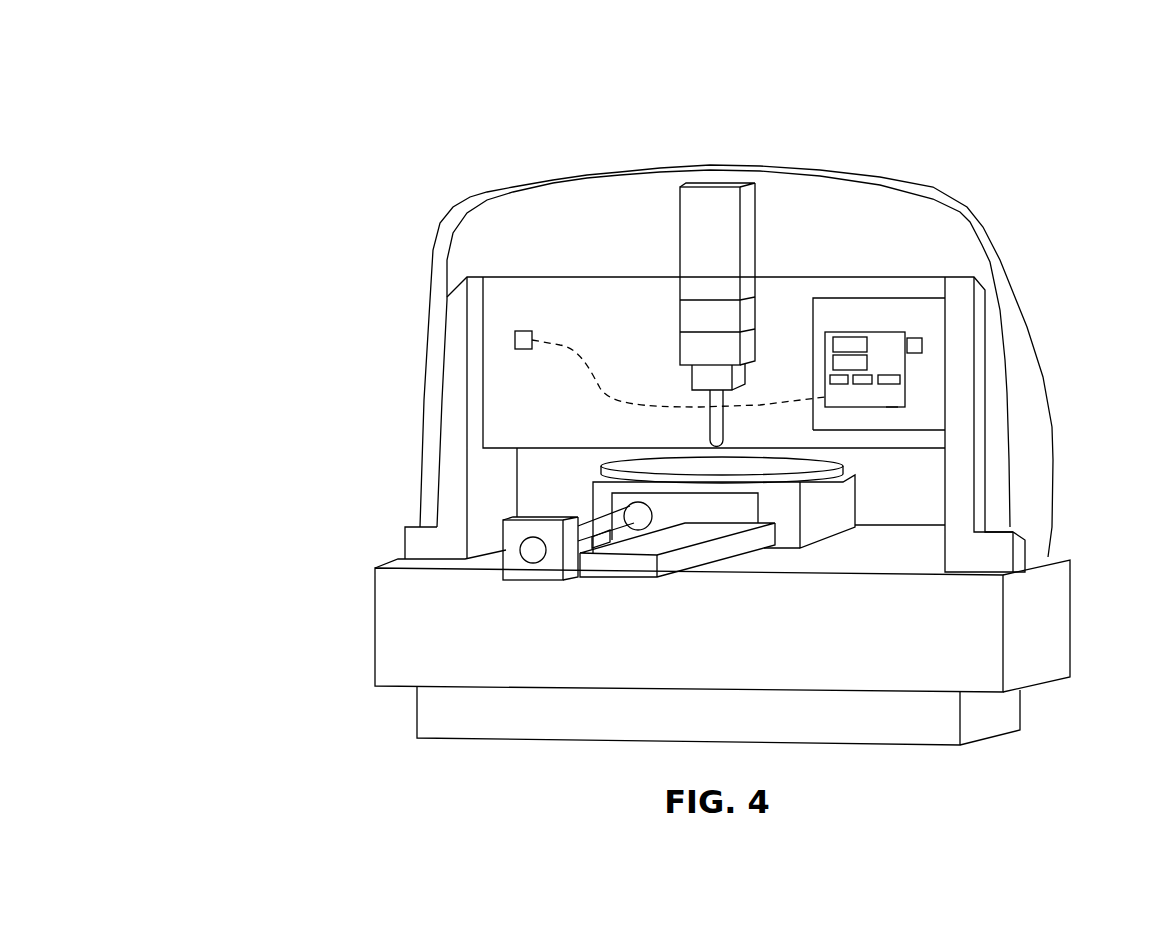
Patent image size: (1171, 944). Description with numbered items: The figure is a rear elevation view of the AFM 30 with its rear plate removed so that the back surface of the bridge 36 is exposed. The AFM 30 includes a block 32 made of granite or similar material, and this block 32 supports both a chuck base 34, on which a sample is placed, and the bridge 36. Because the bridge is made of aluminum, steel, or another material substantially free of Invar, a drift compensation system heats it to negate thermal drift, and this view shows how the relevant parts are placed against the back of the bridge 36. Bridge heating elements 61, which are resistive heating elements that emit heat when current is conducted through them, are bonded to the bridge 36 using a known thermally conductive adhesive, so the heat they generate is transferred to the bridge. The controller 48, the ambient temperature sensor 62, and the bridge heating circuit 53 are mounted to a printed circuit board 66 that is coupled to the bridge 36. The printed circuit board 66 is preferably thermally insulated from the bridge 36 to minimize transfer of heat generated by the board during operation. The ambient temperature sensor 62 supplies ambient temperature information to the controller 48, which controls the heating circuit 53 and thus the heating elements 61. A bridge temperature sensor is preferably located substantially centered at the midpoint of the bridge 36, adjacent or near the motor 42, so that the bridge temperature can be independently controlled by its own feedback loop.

The AFM 30 is at (303, 115).
The block 32 is at (1058, 625).
The chuck base 34 is at (828, 512).
The bridge 36 is at (983, 228).
The motor 42 is at (703, 183).
The controller 48 is at (852, 337).
The bridge heating circuit 53 is at (870, 384).
The bridge heating elements 61 is at (520, 331).
The ambient temperature sensor 62 is at (830, 379).
The printed circuit board 66 is at (892, 407).